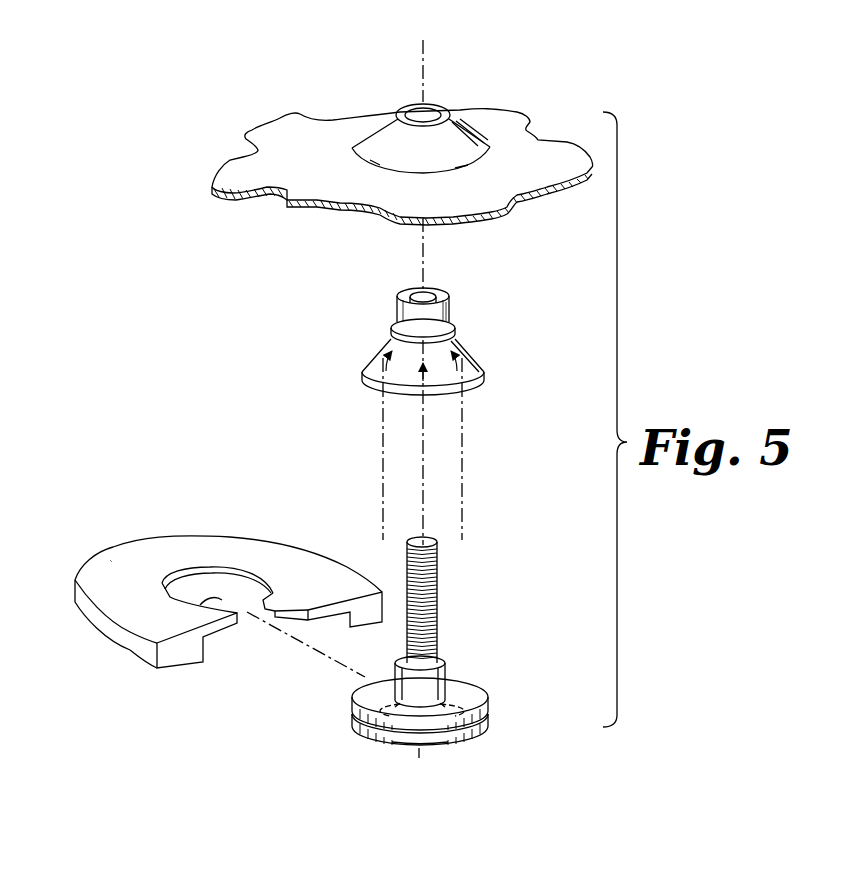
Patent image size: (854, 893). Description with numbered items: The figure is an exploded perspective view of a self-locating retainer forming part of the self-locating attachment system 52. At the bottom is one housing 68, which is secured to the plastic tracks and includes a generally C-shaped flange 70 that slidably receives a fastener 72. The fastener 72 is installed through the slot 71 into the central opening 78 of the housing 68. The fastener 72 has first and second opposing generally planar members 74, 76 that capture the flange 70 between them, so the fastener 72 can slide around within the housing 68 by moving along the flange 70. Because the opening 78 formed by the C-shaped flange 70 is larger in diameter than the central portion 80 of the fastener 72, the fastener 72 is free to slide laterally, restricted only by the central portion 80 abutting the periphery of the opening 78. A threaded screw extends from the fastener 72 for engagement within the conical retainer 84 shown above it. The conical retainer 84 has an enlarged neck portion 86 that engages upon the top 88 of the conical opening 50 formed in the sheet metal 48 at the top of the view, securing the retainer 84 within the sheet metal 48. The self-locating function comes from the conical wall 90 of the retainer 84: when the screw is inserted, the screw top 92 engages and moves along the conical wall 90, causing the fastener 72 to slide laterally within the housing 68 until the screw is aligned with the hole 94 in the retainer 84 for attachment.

The sheet metal 48 is at (402, 116).
The conical opening 50 is at (446, 90).
The top of the conical opening 88 is at (446, 118).
The conical retainer 84 is at (427, 455).
The enlarged neck portion 86 is at (434, 289).
The hole in the retainer 94 is at (417, 293).
The conical wall 90 is at (470, 348).
The top of the screw 92 is at (428, 540).
The first planar member 74 is at (462, 678).
The central portion of the fastener 80 is at (478, 682).
The fastener 72 is at (367, 735).
The second planar member 76 is at (413, 743).
The housing 68 is at (213, 634).
The C-shaped flange 70 is at (173, 607).
The slot 71 is at (265, 610).
The central opening 78 is at (205, 596).
The self-locating attachment system 52 is at (190, 745).